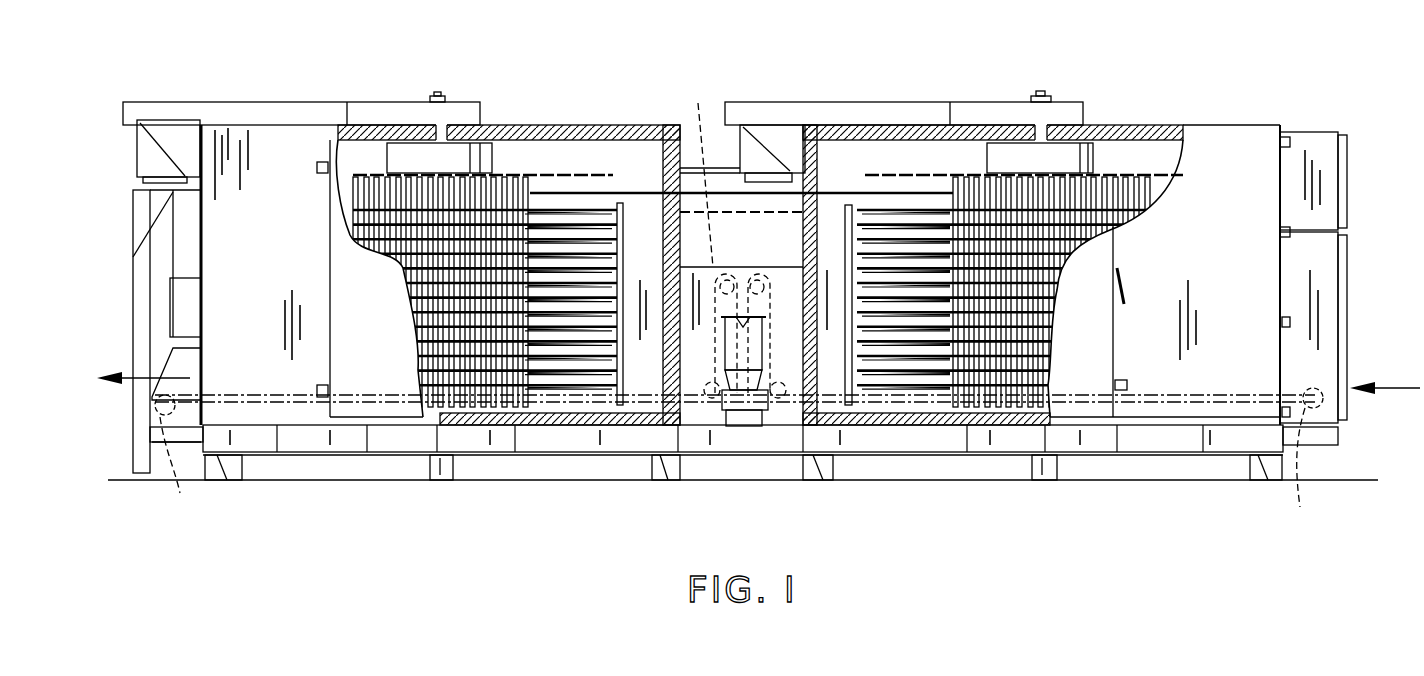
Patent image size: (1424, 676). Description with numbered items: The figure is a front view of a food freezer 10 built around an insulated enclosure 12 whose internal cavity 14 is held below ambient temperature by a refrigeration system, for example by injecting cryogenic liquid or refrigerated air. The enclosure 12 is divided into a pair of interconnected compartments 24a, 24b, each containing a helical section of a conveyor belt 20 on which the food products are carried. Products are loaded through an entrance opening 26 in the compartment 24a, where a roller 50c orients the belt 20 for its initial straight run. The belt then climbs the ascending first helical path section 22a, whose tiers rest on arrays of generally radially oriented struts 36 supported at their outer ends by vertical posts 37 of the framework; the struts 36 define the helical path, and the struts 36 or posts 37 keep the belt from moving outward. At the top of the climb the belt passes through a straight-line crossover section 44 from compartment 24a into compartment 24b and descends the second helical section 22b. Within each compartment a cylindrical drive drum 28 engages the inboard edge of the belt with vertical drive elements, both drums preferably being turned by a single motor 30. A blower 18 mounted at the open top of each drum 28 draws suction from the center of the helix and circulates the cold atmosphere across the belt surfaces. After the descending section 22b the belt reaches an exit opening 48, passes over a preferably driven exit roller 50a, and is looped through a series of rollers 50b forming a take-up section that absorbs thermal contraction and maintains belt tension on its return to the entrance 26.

The freezer 10 is at (333, 102).
The insulated enclosure 12 is at (1247, 124).
The internal cavity 14 is at (848, 153).
The blower 18 is at (477, 155).
The conveyor belt 20 is at (1200, 403).
The first helical path section 22a is at (1132, 177).
The descending helical section 22b is at (590, 205).
The compartment 24a is at (1210, 279).
The compartment 24b is at (283, 277).
The entrance opening 26 is at (1330, 387).
The drive drum 28 is at (493, 195).
The motor 30 is at (745, 400).
The struts 36 is at (593, 378).
The vertical posts 37 is at (623, 218).
The straight-line crossover section 44 is at (723, 168).
The exit opening 48 is at (200, 368).
The exit roller 50a is at (191, 455).
The rollers 50b is at (695, 175).
The roller 50c is at (1324, 453).